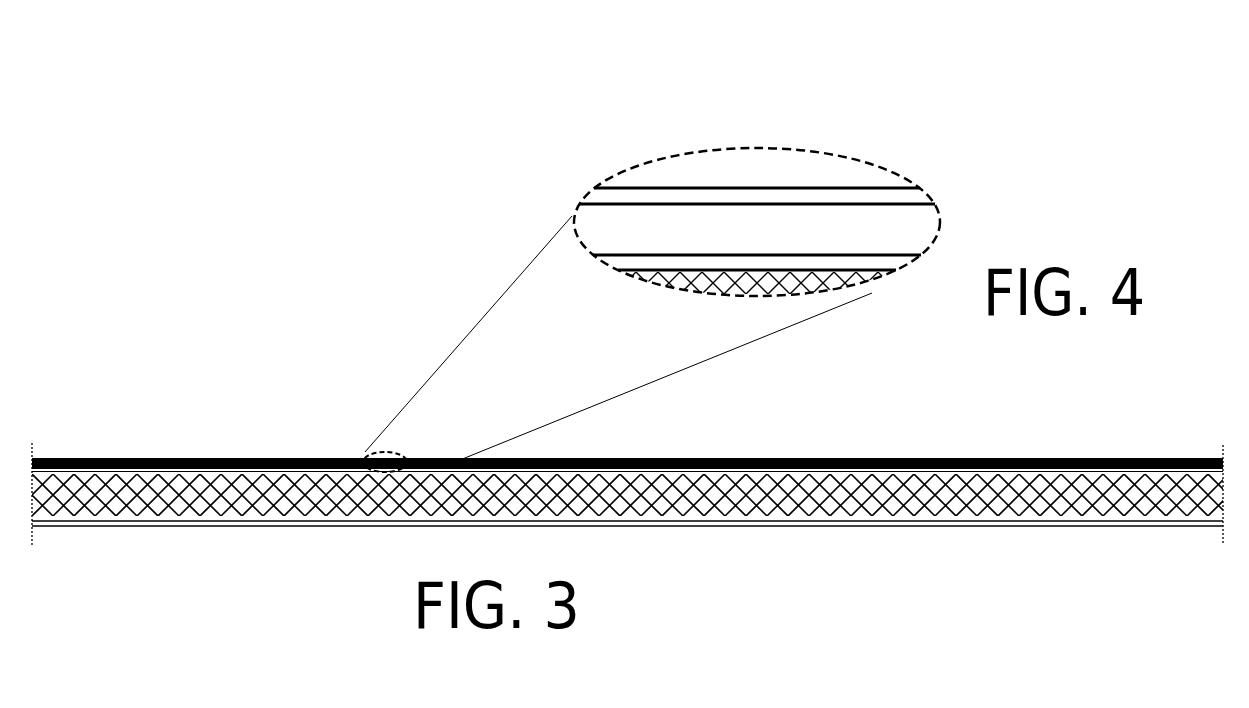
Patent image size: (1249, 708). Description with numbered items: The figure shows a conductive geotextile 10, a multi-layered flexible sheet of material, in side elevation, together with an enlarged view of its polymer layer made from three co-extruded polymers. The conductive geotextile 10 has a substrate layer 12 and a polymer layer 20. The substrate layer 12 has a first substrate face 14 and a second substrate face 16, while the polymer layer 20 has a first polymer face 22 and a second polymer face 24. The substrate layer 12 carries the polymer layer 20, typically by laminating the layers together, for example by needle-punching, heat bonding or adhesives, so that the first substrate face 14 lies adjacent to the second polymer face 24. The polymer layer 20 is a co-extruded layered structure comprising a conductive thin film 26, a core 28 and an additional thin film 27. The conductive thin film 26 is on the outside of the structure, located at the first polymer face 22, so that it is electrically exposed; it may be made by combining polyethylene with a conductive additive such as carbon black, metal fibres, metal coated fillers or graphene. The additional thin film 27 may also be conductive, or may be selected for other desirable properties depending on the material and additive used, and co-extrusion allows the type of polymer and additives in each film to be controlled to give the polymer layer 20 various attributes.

In FIG. 3, the conductive geotextile 10 is at (627, 492).
In FIG. 3, the substrate layer 12 is at (133, 513).
In FIG. 3, the first substrate face 14 is at (176, 473).
In FIG. 3, the second substrate face 16 is at (226, 527).
In FIG. 3, the polymer layer 20 is at (272, 458).
In FIG. 4, the first polymer face 22 is at (768, 188).
In FIG. 4, the second polymer face 24 is at (858, 270).
In FIG. 4, the conductive thin film 26 is at (606, 196).
In FIG. 4, the additional thin film 27 is at (895, 260).
In FIG. 4, the core 28 is at (600, 235).